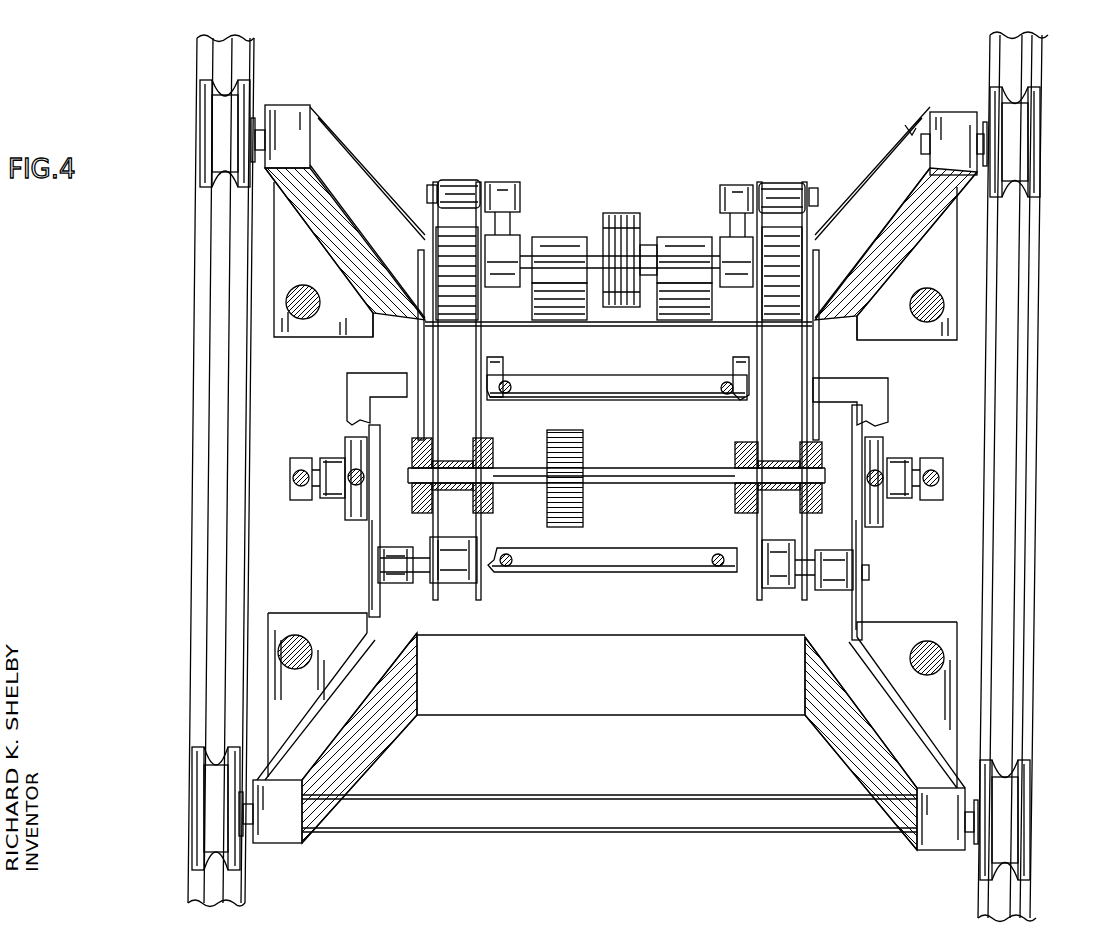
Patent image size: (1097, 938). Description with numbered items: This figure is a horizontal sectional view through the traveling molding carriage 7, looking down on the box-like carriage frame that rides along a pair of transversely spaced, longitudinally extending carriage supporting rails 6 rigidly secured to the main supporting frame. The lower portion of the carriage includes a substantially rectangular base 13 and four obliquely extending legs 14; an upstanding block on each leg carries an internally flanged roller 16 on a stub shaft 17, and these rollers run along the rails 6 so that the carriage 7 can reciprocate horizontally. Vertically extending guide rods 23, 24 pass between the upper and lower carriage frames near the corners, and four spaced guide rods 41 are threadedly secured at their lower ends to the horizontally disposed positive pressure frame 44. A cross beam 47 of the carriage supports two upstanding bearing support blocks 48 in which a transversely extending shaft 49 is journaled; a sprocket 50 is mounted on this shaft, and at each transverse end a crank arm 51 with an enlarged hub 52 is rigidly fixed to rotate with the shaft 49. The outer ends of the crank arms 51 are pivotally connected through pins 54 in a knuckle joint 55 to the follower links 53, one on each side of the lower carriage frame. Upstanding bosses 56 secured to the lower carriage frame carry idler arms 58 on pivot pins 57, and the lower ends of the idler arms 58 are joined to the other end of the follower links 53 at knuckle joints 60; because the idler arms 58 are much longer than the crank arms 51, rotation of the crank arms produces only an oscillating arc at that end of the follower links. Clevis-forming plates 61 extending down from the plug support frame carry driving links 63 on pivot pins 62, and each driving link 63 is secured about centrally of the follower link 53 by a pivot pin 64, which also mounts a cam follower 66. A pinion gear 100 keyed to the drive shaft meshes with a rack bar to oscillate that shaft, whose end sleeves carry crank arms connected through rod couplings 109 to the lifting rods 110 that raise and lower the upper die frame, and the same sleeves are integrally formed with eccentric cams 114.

The carriage supporting rails 6 is at (197, 230).
The traveling molding carriage 7 is at (906, 120).
The base 13 is at (645, 716).
The legs 14 is at (363, 177).
The internally flanged rollers 16 is at (212, 112).
The stub shafts 17 is at (258, 128).
The guide rods 23 is at (303, 319).
The guide rods 24 is at (296, 636).
The guide rods 41 is at (512, 385).
The positive pressure frame 44 is at (605, 380).
The cross beam 47 is at (630, 326).
The bearing support blocks 48 is at (557, 238).
The shaft 49 is at (650, 242).
The sprocket 50 is at (621, 213).
The crank arms 51 is at (512, 182).
The hubs 52 is at (508, 246).
The follower links 53 is at (482, 338).
The pins 54 is at (428, 196).
The knuckle joint 55 is at (455, 179).
The bosses 56 is at (369, 547).
The pivot pins 57 is at (869, 573).
The idler arms 58 is at (436, 583).
The knuckle joints 60 is at (466, 537).
The clevis-forming plates 61 is at (492, 441).
The pivot pins 62 is at (497, 468).
The driving links 63 is at (432, 412).
The pivot pins 64 is at (425, 377).
The cam followers 66 is at (502, 362).
The pinion gear 100 is at (584, 440).
The rod couplings 109 is at (306, 458).
The lifting rods 110 is at (290, 470).
The cams 114 is at (344, 505).